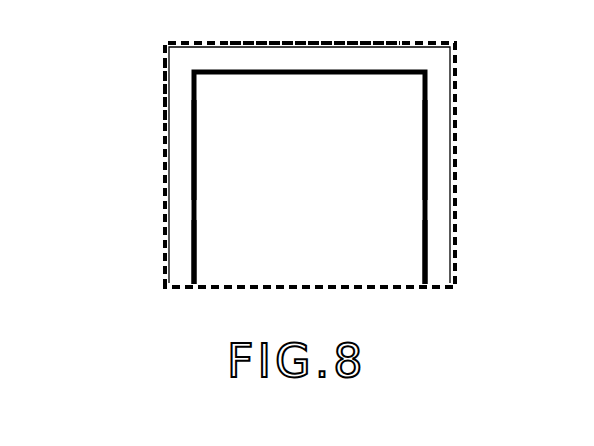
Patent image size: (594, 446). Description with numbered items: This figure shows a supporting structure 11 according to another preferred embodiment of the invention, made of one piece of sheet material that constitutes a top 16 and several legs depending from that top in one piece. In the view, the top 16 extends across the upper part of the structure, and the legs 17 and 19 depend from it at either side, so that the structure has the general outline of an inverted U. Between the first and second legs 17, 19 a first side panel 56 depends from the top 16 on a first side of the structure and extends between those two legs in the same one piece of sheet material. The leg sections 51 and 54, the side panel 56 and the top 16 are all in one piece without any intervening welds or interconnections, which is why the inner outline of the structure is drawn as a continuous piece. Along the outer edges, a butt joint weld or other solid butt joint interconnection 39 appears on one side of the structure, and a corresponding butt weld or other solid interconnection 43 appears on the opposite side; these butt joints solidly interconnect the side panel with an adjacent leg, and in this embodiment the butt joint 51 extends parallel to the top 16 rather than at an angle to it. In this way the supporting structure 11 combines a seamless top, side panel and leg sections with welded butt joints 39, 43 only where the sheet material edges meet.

The supporting structure 11 is at (329, 38).
The top 16 is at (297, 40).
The leg 17 is at (432, 144).
The leg 19 is at (178, 133).
The butt joint weld 39 is at (460, 69).
The butt weld 43 is at (160, 71).
The leg section 51 is at (435, 244).
The leg section 54 is at (183, 250).
The first side panel 56 is at (345, 58).